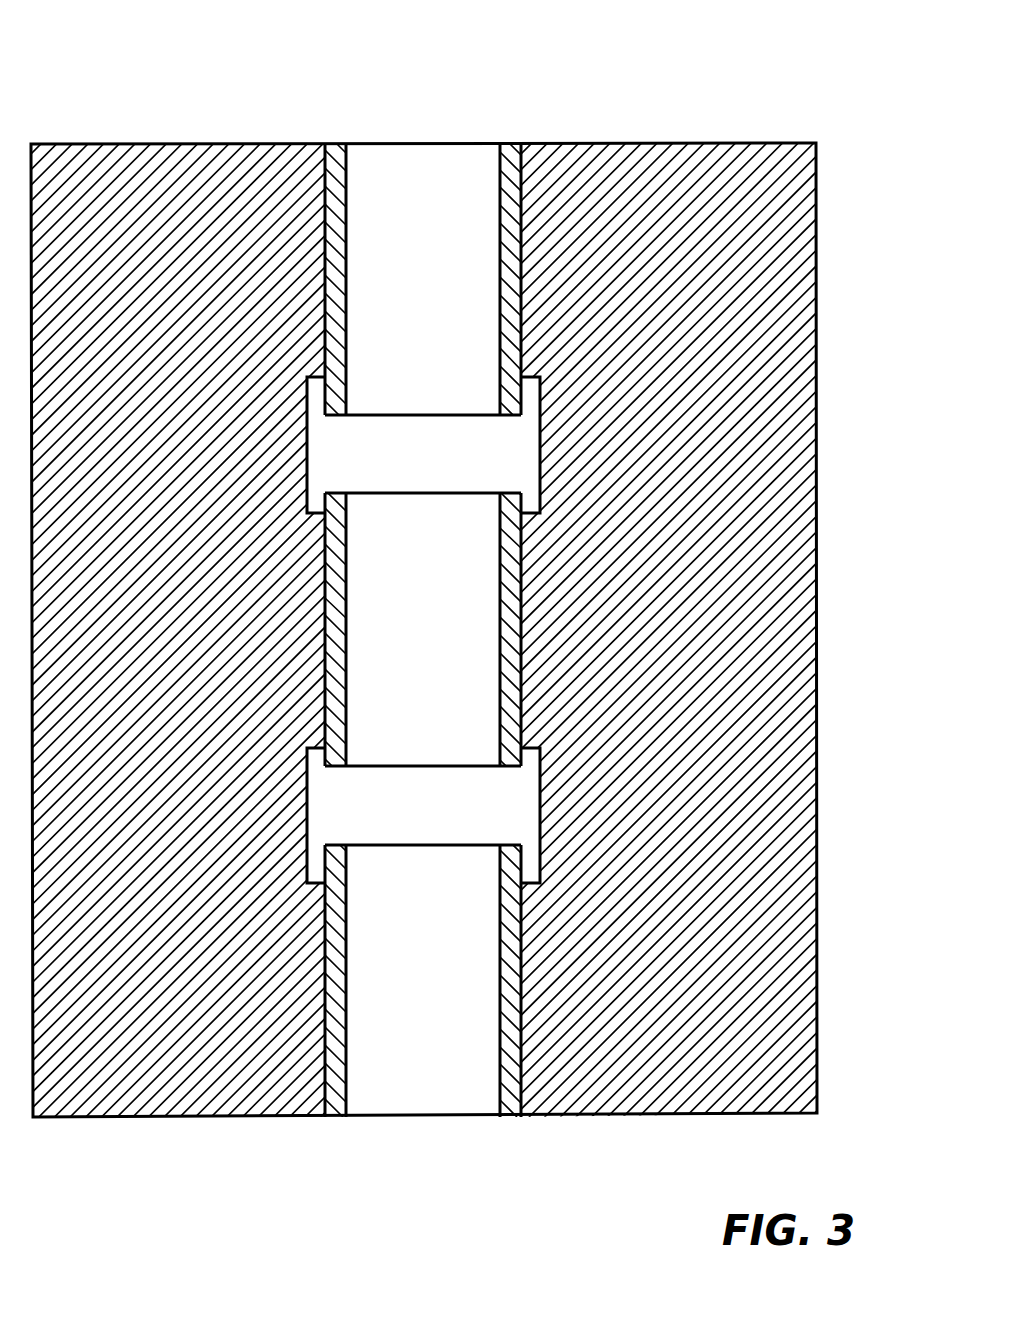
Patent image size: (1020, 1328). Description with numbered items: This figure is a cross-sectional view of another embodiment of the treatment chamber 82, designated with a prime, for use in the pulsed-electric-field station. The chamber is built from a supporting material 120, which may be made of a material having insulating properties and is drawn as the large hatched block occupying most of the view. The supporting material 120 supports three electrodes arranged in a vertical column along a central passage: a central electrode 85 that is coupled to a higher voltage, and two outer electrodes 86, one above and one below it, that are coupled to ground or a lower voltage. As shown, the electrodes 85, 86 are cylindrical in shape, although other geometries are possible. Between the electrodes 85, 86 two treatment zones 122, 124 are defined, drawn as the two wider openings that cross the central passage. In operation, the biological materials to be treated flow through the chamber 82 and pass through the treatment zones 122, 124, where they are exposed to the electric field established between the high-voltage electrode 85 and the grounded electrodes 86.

The treatment chamber 82 is at (562, 98).
The supporting material 120 is at (790, 418).
The electrode 86 is at (423, 630).
The electrode 85 is at (423, 629).
The treatment zone 122 is at (452, 472).
The treatment zone 124 is at (454, 823).